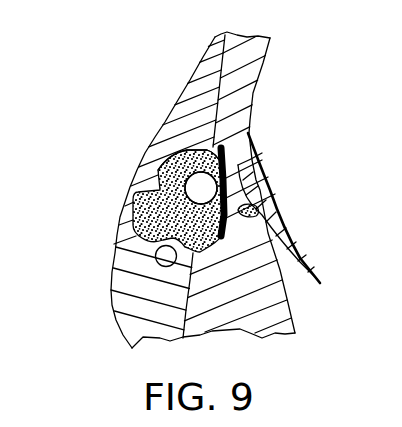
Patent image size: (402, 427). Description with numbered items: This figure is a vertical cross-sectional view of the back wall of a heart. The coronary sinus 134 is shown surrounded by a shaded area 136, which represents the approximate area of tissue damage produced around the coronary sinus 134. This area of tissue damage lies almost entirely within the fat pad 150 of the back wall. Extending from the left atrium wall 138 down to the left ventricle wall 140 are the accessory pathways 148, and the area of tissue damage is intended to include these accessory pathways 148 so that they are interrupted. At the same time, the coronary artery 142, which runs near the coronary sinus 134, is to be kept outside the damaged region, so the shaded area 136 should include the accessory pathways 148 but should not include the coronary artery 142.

The coronary sinus 134 is at (140, 192).
The shaded area 136 is at (158, 150).
The left atrium wall 138 is at (251, 97).
The left ventricle wall 140 is at (293, 306).
The coronary artery 142 is at (156, 257).
The accessory pathways 148 is at (262, 153).
The fat pad 150 is at (197, 70).